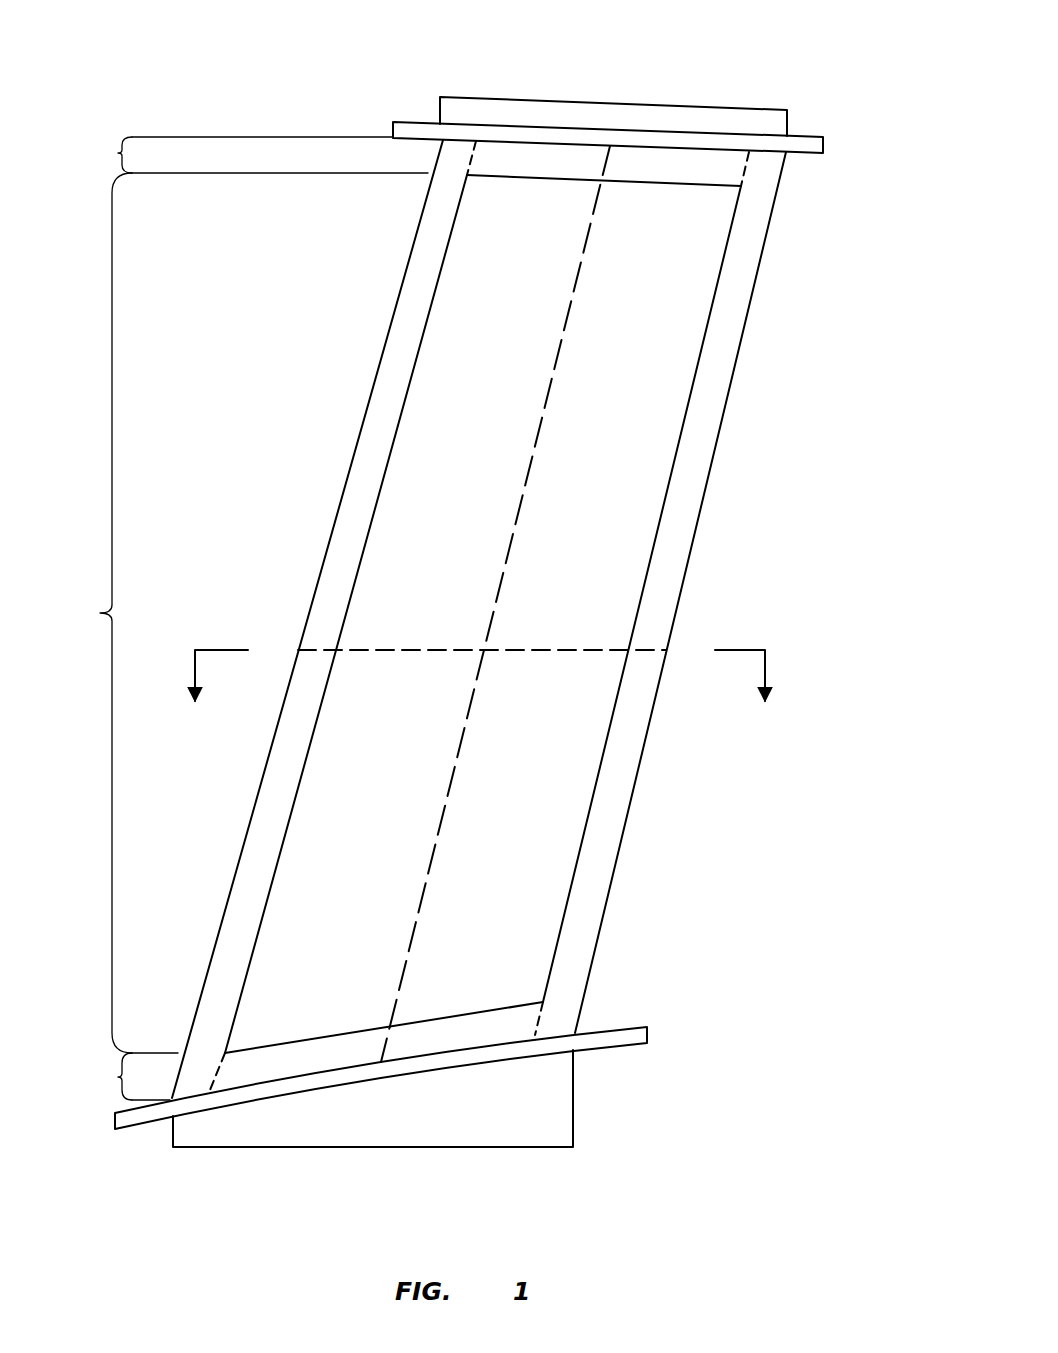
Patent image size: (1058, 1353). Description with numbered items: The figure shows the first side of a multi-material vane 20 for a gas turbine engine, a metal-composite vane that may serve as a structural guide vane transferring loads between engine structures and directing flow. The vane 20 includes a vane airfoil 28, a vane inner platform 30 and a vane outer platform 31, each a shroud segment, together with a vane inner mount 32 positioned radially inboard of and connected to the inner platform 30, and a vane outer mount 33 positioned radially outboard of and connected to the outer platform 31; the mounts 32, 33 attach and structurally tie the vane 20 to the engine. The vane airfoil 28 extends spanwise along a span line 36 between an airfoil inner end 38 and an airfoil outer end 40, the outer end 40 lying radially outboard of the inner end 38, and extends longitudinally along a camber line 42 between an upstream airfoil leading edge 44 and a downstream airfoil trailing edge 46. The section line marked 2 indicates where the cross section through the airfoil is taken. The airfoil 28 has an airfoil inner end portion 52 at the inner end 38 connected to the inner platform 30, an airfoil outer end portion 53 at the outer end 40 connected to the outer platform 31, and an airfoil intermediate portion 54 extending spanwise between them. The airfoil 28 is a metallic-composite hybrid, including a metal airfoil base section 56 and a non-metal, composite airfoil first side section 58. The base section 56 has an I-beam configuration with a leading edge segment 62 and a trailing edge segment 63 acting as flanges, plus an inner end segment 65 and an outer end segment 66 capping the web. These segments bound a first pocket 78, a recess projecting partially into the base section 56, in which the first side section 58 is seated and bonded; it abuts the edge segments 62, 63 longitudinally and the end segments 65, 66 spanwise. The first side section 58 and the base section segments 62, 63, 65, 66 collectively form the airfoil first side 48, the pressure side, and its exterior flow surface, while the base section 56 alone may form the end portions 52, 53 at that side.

The multi-material vane 20 is at (807, 76).
The vane airfoil 28 is at (501, 641).
The vane inner platform 30 is at (660, 1032).
The vane outer platform 31 is at (838, 145).
The vane inner mount 32 is at (579, 1113).
The vane outer mount 33 is at (765, 106).
The span line 36 is at (495, 603).
The airfoil inner end 38 is at (405, 1058).
The airfoil outer end 40 is at (640, 147).
The camber line 42 is at (550, 652).
The airfoil leading edge 44 is at (320, 567).
The airfoil trailing edge 46 is at (683, 582).
The airfoil first side 48 is at (345, 803).
The airfoil inner end portion 52 is at (125, 1076).
The airfoil outer end portion 53 is at (250, 155).
The airfoil intermediate portion 54 is at (94, 613).
The airfoil base section 56 is at (729, 393).
The airfoil first side section 58 is at (710, 330).
The leading edge segment 62 is at (345, 428).
The trailing edge segment 63 is at (699, 520).
The inner end segment 65 is at (501, 1044).
The outer end segment 66 is at (695, 146).
The first pocket 78 is at (597, 783).
The section 2- 2 is at (480, 696).